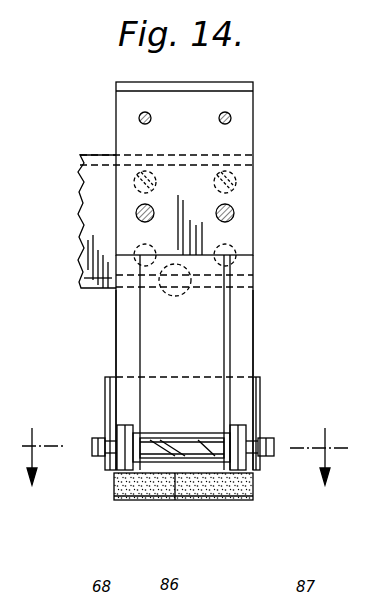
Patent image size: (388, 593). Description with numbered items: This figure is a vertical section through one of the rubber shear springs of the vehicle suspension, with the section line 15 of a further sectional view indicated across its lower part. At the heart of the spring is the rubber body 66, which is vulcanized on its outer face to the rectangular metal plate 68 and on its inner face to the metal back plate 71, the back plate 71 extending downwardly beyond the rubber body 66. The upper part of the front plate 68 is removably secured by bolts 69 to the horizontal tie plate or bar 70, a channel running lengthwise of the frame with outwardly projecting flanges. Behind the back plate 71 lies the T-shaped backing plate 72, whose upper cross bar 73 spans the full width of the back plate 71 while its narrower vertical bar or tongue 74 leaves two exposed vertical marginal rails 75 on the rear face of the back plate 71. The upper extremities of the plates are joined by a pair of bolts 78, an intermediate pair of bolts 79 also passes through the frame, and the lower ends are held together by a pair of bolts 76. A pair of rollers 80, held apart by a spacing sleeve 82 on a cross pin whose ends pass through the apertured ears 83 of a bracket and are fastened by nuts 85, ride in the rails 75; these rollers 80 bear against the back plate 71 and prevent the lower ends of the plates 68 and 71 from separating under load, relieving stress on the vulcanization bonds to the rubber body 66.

The section line 15 is at (180, 454).
The rubber body 66 is at (128, 501).
The rectangular metal plate 68 is at (222, 503).
The bolts 69 is at (180, 152).
The horizontal tie plate or bar 70 is at (80, 191).
The metal back plate 71 is at (140, 341).
The T-shaped backing plate 72 is at (232, 343).
The upper cross bar 73 is at (255, 138).
The vertical bar or tongue 74 is at (150, 362).
The vertical marginal rails 75 is at (118, 310).
The bolts 76 is at (176, 502).
The bolts 78 is at (219, 121).
The bolts 79 is at (216, 213).
The rollers 80 is at (256, 418).
The spacing sleeve 82 is at (186, 440).
The apertured ears 83 is at (106, 401).
The nuts 85 is at (96, 438).